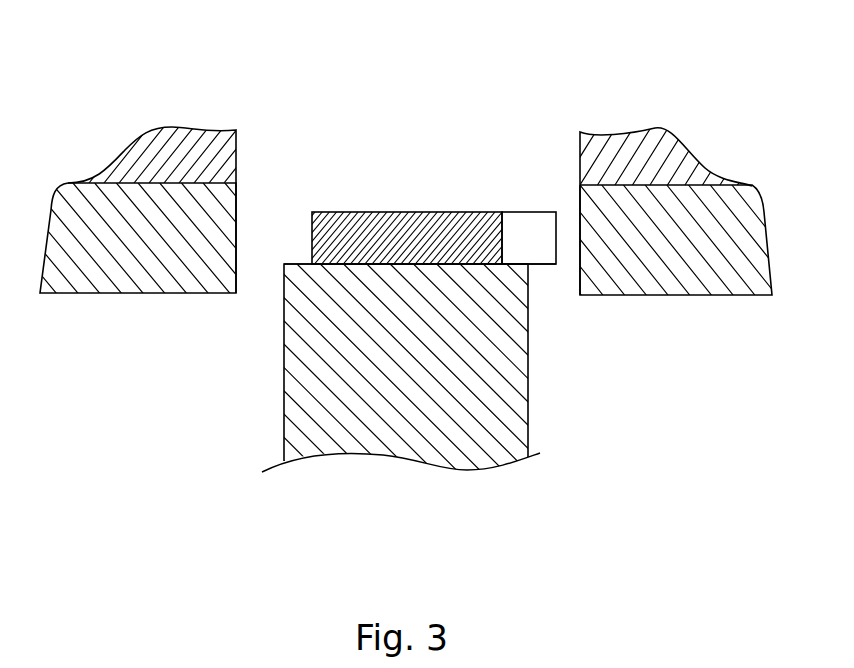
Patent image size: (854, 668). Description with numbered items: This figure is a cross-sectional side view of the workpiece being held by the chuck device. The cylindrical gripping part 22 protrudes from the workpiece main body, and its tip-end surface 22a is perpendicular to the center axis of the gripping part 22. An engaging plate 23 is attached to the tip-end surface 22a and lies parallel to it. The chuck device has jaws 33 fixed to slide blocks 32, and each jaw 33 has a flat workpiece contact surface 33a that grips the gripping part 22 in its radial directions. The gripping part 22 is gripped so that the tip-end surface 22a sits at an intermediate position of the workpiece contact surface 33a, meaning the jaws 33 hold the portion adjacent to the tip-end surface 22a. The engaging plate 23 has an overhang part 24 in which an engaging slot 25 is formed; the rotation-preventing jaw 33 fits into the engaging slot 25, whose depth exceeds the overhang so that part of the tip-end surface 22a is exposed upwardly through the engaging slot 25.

The gripping part 22 is at (413, 415).
The tip-end surface 22a is at (362, 263).
The engaging plate 23 is at (414, 231).
The overhang part 24 is at (540, 265).
The engaging slot 25 is at (537, 230).
The slide block 32 is at (177, 147).
The jaw 33 is at (138, 273).
The workpiece contact surface 33a is at (236, 236).